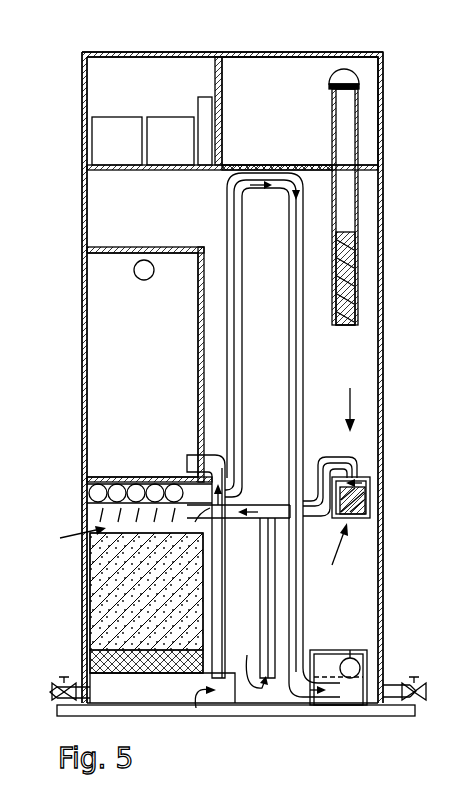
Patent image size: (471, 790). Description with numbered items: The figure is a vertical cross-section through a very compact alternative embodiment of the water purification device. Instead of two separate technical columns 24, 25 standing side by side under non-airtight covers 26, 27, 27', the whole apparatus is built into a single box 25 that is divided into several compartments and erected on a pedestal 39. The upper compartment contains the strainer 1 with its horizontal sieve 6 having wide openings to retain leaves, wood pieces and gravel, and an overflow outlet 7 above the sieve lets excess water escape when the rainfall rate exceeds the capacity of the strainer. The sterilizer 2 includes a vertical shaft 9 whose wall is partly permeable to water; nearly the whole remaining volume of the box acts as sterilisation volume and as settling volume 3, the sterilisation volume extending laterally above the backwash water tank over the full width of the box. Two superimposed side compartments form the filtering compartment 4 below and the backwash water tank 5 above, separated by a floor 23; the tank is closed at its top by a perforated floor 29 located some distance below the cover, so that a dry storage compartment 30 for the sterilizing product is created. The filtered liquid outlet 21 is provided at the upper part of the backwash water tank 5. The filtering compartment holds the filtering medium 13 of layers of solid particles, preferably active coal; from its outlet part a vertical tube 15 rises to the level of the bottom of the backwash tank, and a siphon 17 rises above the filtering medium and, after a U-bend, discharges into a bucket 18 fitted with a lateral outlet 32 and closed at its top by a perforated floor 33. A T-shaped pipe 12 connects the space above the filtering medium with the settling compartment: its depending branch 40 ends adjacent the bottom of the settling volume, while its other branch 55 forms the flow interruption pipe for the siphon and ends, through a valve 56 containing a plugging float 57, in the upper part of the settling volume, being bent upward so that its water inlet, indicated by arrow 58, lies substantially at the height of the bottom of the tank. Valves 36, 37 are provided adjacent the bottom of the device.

The strainer 1 is at (384, 282).
The sterilizer 2 is at (368, 244).
The settling tank 3 is at (368, 597).
The filtering compartment 4 is at (126, 530).
The backwash water tank 5 is at (100, 316).
The strainer sieve 6 is at (268, 163).
The overflow outlet 7 is at (345, 78).
The vertical shaft 9 is at (358, 118).
The T-shaped pipe 12 is at (283, 508).
The filtering medium 13 is at (108, 573).
The vertical tube 15 is at (219, 553).
The siphon 17 is at (230, 234).
The bucket 18 is at (360, 699).
The filtered liquid outlet 21 is at (134, 271).
The floor 23 is at (110, 479).
The vertical column 24 is at (78, 383).
The box 25 is at (389, 379).
The cover 26 is at (196, 708).
The cover 27 is at (302, 35).
The top wall left portion 27' is at (151, 35).
The perforated floor 29 is at (112, 247).
The storage compartment 30 is at (138, 94).
The lateral outlet 32 is at (344, 660).
The perforated floor 33 is at (360, 655).
The valve 36 is at (82, 685).
The valve 37 is at (398, 684).
The pedestal 39 is at (293, 713).
The depending branch 40 is at (268, 631).
The flow interruption branch 55 is at (348, 404).
The valve 56 is at (334, 555).
The plugging float 57 is at (366, 497).
The water inlet arrow 58 is at (370, 452).